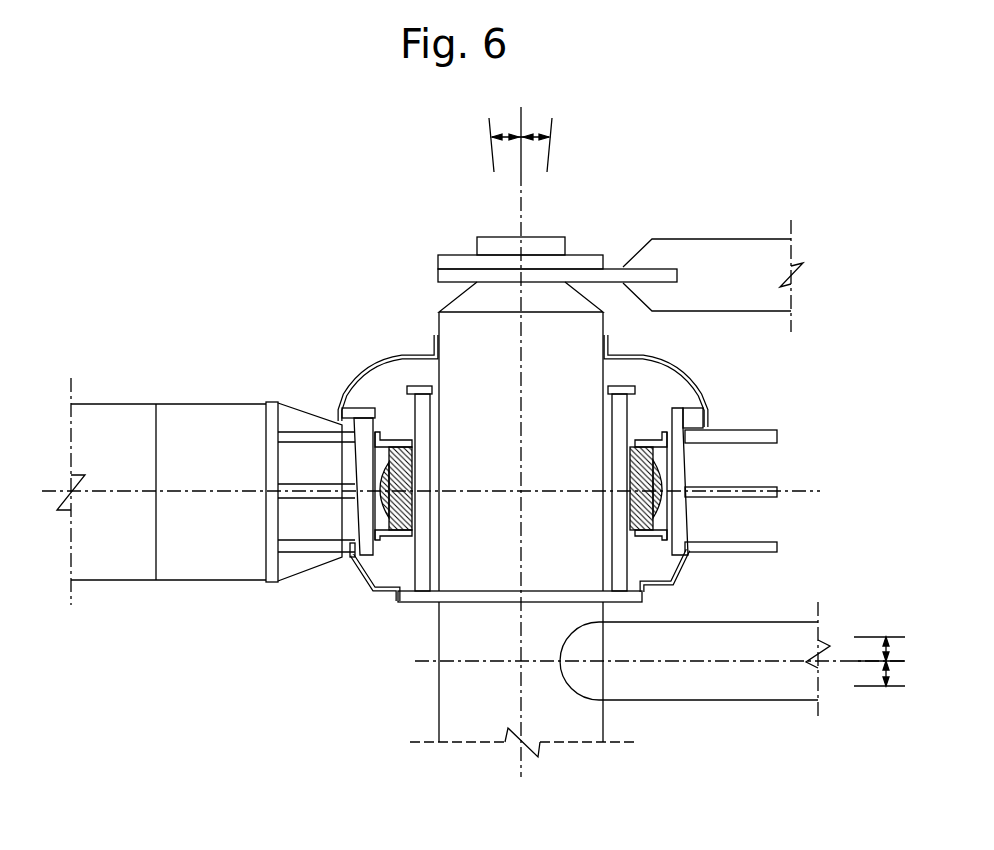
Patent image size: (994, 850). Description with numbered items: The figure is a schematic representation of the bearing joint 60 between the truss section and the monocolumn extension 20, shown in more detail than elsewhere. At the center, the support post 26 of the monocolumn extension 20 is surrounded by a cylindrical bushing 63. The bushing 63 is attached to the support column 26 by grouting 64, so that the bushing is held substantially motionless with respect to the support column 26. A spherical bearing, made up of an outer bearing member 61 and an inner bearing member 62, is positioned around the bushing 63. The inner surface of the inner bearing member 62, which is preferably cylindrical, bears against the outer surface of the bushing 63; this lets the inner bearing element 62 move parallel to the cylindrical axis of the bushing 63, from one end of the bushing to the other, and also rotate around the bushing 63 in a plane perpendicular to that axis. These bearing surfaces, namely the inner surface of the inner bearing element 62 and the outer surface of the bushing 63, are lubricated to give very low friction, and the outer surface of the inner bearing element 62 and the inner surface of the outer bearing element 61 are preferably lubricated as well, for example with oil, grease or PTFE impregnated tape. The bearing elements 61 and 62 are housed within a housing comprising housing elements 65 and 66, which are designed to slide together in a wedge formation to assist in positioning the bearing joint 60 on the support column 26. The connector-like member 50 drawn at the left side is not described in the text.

The monocolumn extension 20 is at (713, 700).
The support post 26 is at (473, 712).
The connector 50 is at (128, 403).
The bearing joint 60 is at (747, 430).
The outer bearing member 61 is at (350, 543).
The inner bearing member 62 is at (392, 527).
The cylindrical bushing 63 is at (412, 410).
The grouting 64 is at (430, 573).
The housing element 65 is at (658, 548).
The housing element 66 is at (685, 528).